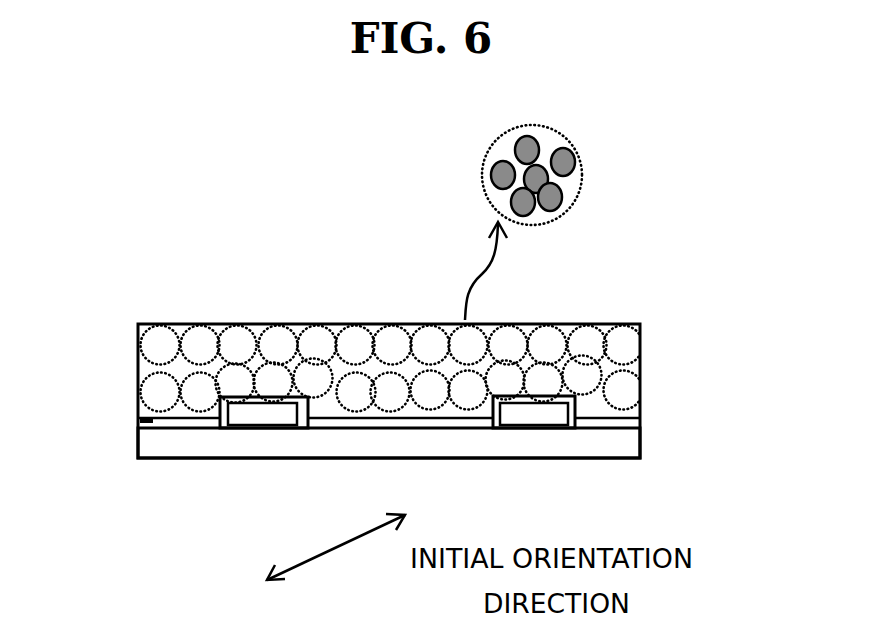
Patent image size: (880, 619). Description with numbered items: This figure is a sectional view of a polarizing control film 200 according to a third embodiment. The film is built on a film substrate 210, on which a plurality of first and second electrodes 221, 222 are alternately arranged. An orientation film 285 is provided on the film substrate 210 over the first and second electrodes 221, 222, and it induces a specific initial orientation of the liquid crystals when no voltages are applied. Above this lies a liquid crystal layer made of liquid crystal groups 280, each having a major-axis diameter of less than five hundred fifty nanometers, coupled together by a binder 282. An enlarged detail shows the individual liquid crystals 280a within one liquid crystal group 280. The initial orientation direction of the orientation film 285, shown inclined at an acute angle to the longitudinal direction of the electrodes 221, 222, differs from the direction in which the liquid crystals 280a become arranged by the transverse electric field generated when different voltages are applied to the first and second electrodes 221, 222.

The polarizing control film 200 is at (674, 334).
The film substrate 210 is at (172, 450).
The first electrode 221 is at (257, 428).
The second electrode 222 is at (538, 427).
The liquid crystal group 280 is at (568, 141).
The liquid crystal 280a is at (562, 207).
The binder 282 is at (138, 325).
The orientation film 285 is at (138, 422).